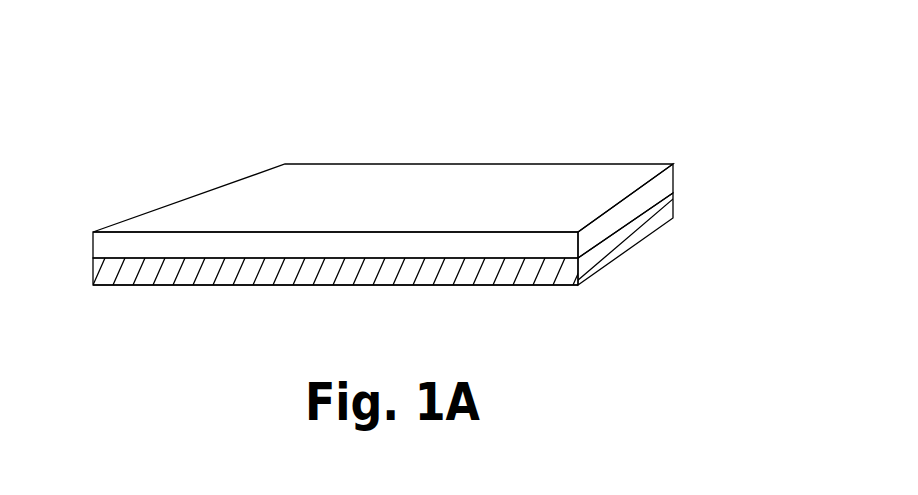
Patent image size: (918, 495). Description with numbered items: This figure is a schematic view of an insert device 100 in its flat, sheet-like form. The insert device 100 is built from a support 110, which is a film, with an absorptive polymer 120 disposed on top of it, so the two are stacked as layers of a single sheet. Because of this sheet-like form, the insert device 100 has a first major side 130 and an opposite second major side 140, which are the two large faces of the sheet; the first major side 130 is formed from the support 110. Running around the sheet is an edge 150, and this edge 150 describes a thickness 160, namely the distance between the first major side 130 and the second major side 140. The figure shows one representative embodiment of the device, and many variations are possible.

The insert device 100 is at (626, 60).
The support 110 is at (670, 210).
The absorptive polymer 120 is at (665, 180).
The first major side 130 is at (403, 287).
The second major side 140 is at (502, 176).
The edge 150 is at (92, 267).
The thickness 160 is at (92, 247).